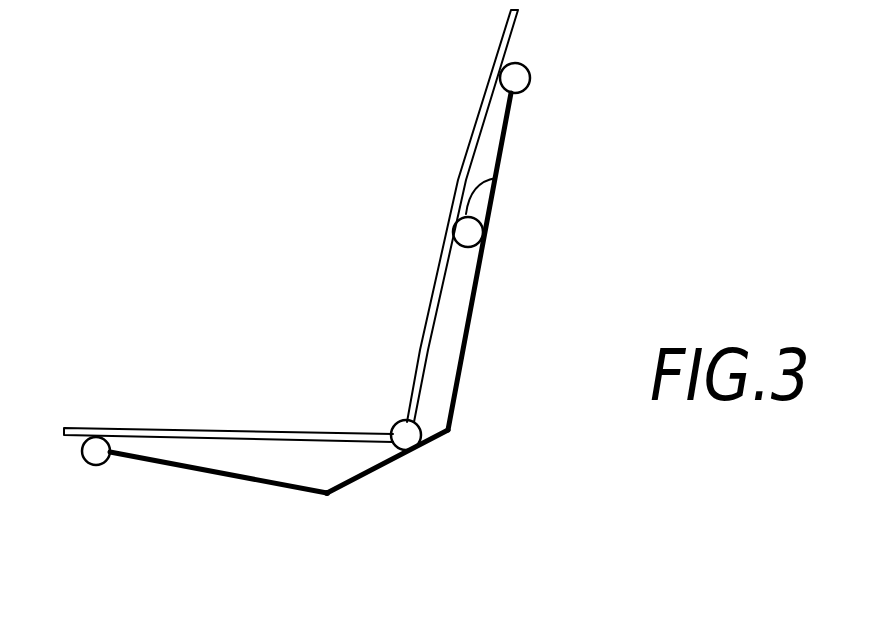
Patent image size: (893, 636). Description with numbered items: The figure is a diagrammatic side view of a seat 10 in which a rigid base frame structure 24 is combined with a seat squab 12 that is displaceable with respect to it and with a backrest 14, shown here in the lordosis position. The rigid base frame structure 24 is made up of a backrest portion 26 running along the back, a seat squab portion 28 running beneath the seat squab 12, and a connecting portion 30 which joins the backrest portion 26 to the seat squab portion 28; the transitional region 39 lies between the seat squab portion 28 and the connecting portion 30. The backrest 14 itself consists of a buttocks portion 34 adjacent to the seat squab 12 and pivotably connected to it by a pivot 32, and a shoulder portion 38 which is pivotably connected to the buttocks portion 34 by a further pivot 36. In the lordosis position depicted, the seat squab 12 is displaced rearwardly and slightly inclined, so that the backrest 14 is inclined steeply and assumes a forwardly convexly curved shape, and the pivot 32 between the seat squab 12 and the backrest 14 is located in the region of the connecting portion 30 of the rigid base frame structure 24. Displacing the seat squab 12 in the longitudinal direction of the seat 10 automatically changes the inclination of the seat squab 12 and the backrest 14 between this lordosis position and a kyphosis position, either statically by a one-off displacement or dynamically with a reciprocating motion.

The seat 10 is at (267, 268).
The seat squab 12 is at (223, 429).
The backrest 14 is at (441, 209).
The rigid base frame structure 24 is at (518, 261).
The backrest portion 26 is at (483, 265).
The seat squab portion 28 is at (210, 475).
The connecting portion 30 is at (386, 466).
The pivot 32 is at (396, 423).
The buttocks portion 34 is at (437, 313).
The pivot 36 is at (493, 181).
The shoulder portion 38 is at (490, 97).
The transitional region 39 is at (327, 496).